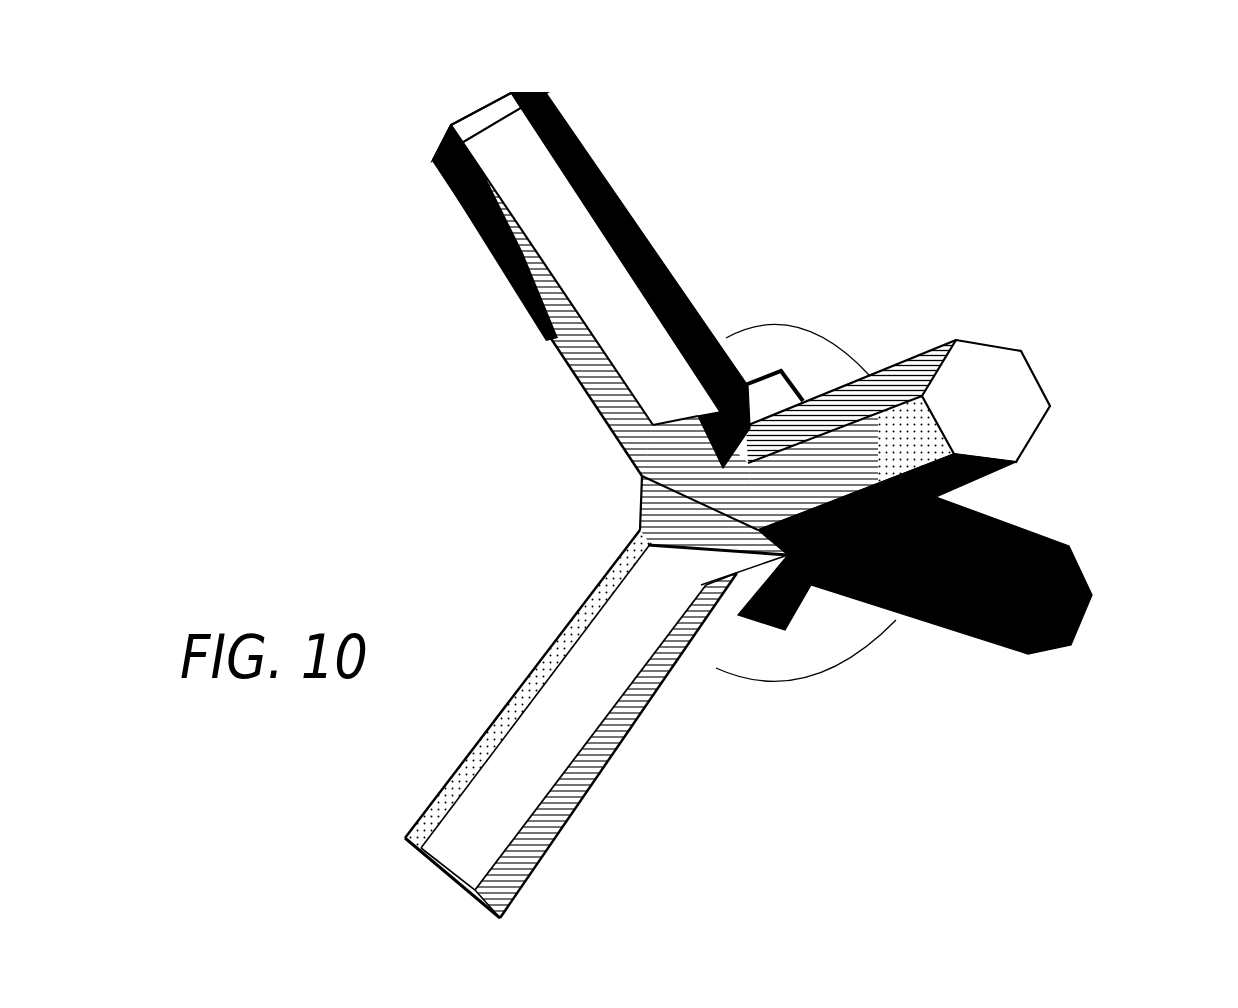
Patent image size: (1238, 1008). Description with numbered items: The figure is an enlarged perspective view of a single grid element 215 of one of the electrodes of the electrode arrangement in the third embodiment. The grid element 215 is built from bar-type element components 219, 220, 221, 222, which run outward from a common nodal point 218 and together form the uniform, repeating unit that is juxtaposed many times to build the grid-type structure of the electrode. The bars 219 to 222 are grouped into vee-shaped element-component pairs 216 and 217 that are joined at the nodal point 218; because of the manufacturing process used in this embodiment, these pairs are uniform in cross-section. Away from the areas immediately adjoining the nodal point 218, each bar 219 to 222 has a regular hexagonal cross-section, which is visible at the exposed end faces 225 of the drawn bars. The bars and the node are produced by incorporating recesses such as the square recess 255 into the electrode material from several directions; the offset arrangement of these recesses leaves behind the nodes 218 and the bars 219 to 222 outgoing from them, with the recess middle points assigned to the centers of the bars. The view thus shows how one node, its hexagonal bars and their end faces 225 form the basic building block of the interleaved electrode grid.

The grid element 215 is at (986, 160).
The vee-shaped element-component pair 216 is at (730, 285).
The vee-shaped element-component pair 217 is at (700, 678).
The nodal point 218 is at (632, 470).
The bar-type element component 219 is at (455, 200).
The bar-type element component 220 is at (908, 345).
The bar-type element component 221 is at (600, 775).
The bar-type element component 222 is at (983, 637).
The end face 225 is at (1008, 374).
The recess 255 is at (470, 99).